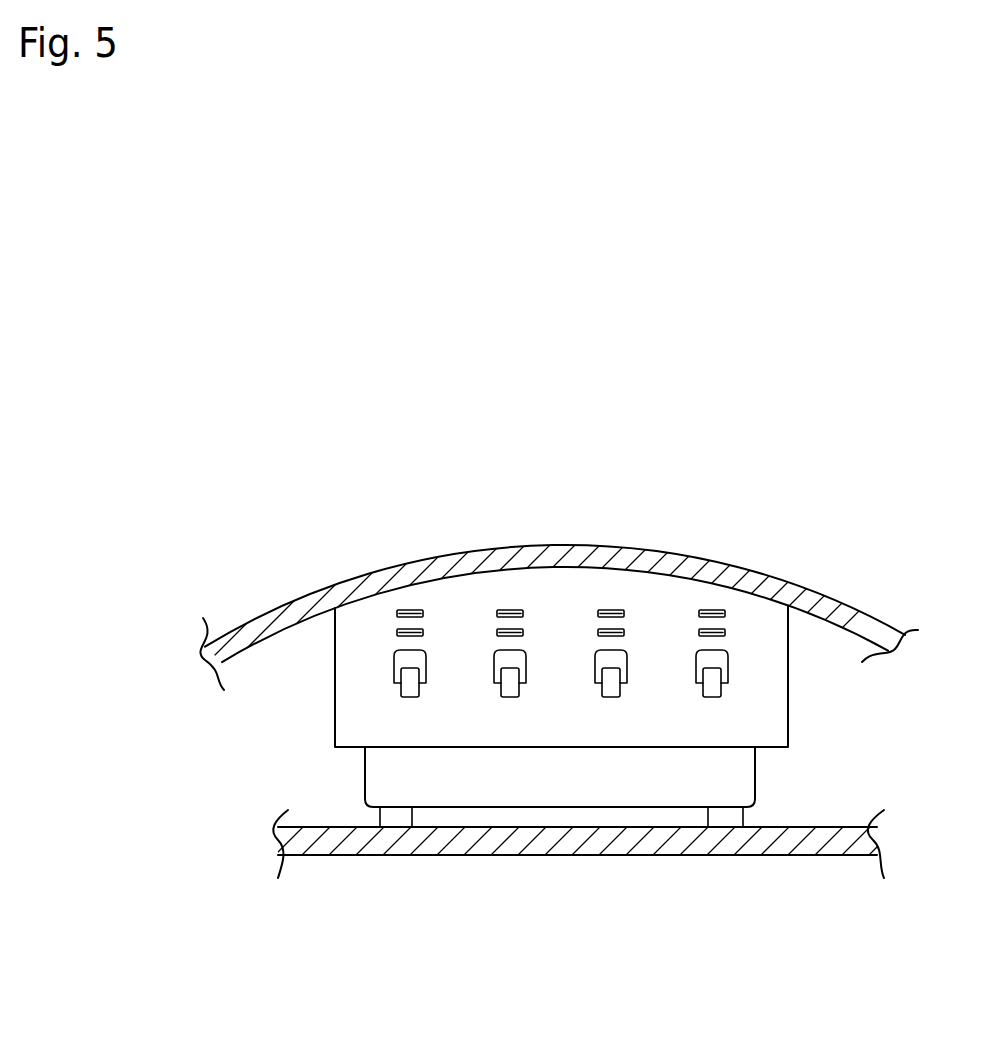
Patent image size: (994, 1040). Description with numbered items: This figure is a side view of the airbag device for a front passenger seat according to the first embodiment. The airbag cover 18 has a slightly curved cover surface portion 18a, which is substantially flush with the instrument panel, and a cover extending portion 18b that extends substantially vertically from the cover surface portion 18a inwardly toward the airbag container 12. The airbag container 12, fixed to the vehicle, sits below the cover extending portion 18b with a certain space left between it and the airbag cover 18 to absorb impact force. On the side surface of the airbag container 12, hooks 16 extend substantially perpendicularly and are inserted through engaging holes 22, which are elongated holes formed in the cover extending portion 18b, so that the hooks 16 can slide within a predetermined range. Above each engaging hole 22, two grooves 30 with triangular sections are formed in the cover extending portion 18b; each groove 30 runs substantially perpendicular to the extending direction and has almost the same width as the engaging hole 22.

The airbag container 12 is at (755, 772).
The hook 16 is at (724, 683).
The airbag cover 18 is at (535, 587).
The cover surface portion 18a is at (688, 553).
The cover extending portion 18b is at (333, 727).
The engaging hole 22 is at (393, 655).
The groove 30 is at (406, 607).